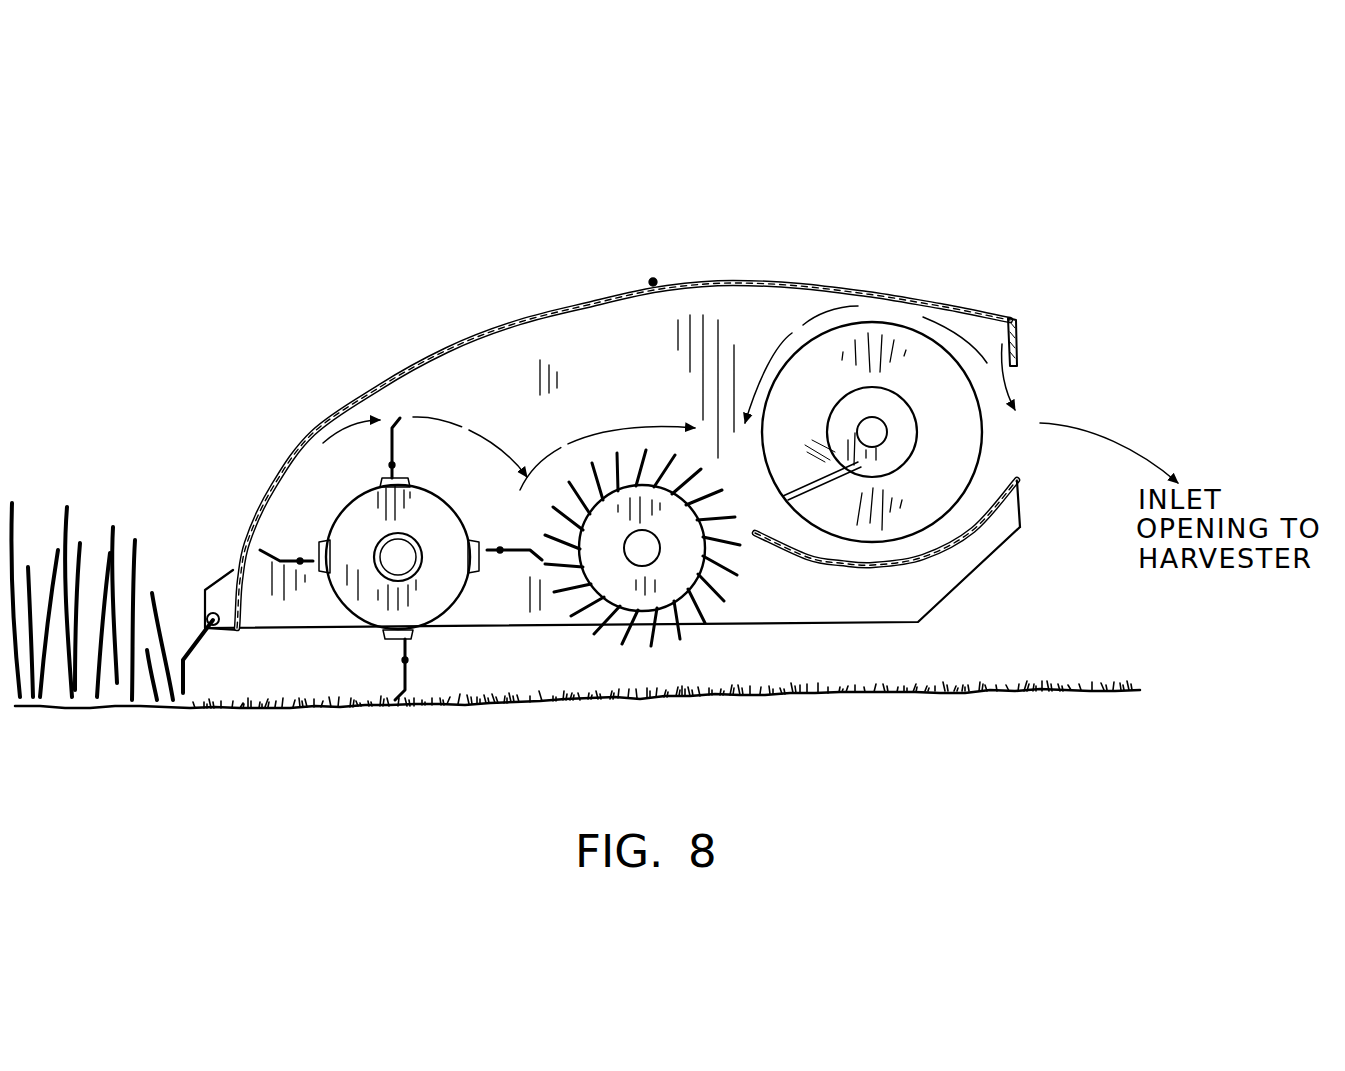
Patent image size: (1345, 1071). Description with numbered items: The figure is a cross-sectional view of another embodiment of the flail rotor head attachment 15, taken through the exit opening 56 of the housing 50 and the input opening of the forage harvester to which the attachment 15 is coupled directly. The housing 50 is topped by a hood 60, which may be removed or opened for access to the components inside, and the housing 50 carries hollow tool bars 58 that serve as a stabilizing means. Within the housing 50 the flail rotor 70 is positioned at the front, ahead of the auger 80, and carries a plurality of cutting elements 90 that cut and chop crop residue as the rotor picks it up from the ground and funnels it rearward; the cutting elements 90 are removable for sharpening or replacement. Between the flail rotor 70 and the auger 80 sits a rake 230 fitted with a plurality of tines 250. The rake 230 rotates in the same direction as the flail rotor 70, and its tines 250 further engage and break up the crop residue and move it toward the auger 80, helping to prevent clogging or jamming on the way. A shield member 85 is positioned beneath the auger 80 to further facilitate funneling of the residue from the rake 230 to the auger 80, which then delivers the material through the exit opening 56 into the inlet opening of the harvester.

The flail rotor head attachment 15 is at (772, 248).
The housing 50 is at (322, 398).
The exit opening 56 is at (996, 340).
The hollow tool bars 58 is at (190, 665).
The hood 60 is at (878, 296).
The flail rotor 70 is at (440, 573).
The auger 80 is at (930, 478).
The shield member 85 is at (878, 570).
The cutting elements 90 is at (395, 443).
The rake 230 is at (647, 552).
The tines 250 is at (727, 567).